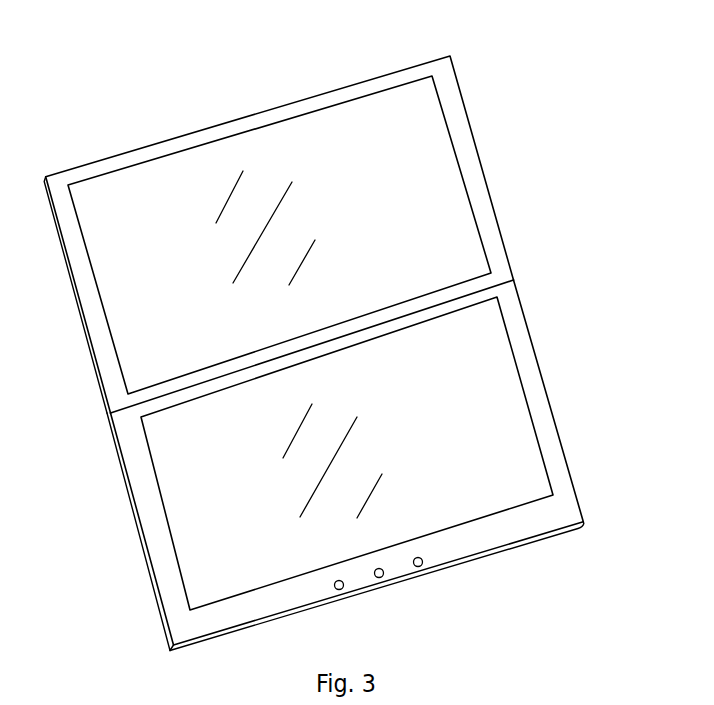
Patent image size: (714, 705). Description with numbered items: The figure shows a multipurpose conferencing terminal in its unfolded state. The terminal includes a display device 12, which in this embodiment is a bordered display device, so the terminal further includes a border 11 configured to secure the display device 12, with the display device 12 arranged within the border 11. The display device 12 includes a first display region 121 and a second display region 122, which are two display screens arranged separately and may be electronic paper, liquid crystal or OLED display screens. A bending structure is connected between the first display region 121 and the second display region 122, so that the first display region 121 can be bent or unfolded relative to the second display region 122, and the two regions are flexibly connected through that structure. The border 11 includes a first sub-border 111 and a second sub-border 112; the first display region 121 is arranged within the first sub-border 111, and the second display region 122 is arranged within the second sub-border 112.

The border 11 is at (598, 208).
The first sub-border 111 is at (512, 318).
The second sub-border 112 is at (482, 197).
The display device 12 is at (195, 46).
The first display region 121 is at (173, 470).
The second display region 122 is at (123, 202).